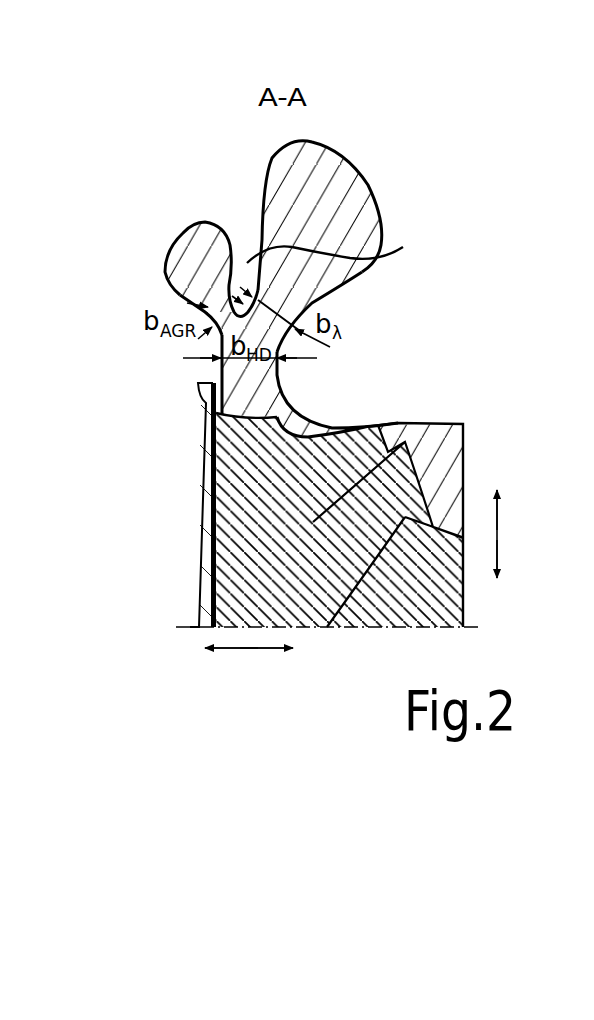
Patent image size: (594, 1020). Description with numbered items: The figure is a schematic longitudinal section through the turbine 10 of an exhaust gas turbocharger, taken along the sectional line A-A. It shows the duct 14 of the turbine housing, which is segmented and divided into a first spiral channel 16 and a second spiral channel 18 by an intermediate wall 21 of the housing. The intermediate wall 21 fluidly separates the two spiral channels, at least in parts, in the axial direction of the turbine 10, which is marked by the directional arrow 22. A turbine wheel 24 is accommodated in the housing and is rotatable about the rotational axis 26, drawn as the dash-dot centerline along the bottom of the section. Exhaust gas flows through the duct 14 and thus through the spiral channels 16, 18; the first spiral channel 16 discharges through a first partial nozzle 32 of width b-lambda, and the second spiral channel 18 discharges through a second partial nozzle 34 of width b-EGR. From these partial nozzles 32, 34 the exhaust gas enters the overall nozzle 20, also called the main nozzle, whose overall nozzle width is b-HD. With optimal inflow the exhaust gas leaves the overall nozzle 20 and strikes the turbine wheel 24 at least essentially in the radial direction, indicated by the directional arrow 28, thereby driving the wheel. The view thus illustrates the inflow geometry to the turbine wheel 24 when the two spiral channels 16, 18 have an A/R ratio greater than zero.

The turbine 10 is at (358, 674).
The duct 14 is at (373, 165).
The first spiral channel 16 is at (343, 220).
The second spiral channel 18 is at (192, 247).
The overall nozzle 20 is at (258, 367).
The intermediate wall 21 is at (342, 243).
The directional arrow 22 is at (247, 648).
The turbine wheel 24 is at (376, 424).
The rotational axis 26 is at (195, 627).
The directional arrow 28 is at (497, 537).
The first partial nozzle 32 is at (293, 307).
The second partial nozzle 34 is at (214, 325).